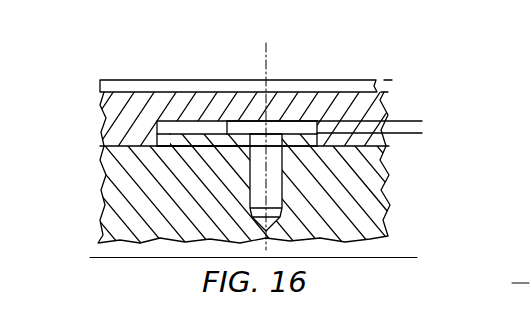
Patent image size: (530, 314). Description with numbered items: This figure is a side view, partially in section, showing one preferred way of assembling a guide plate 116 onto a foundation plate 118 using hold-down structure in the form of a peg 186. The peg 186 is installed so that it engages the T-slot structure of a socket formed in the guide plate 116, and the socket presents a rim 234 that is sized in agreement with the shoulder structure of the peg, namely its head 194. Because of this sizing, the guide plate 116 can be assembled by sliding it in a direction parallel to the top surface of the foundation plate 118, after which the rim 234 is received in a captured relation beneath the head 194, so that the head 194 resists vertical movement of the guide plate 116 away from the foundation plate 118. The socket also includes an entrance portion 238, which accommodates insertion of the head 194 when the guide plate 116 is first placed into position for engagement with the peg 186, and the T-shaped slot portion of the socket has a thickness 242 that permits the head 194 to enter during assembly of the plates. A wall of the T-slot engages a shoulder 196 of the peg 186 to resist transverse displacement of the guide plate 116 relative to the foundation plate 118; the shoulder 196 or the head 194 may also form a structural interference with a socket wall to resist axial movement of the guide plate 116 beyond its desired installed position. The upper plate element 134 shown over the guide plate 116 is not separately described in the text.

The guide plate 116 is at (347, 103).
The foundation plate 118 is at (349, 196).
The cover plate 134 is at (140, 88).
The peg 186 is at (288, 132).
The head 194 is at (260, 138).
The shoulder 196 is at (260, 134).
The rim 234 is at (302, 139).
The entrance portion 238 is at (173, 139).
The thickness 242 is at (408, 150).